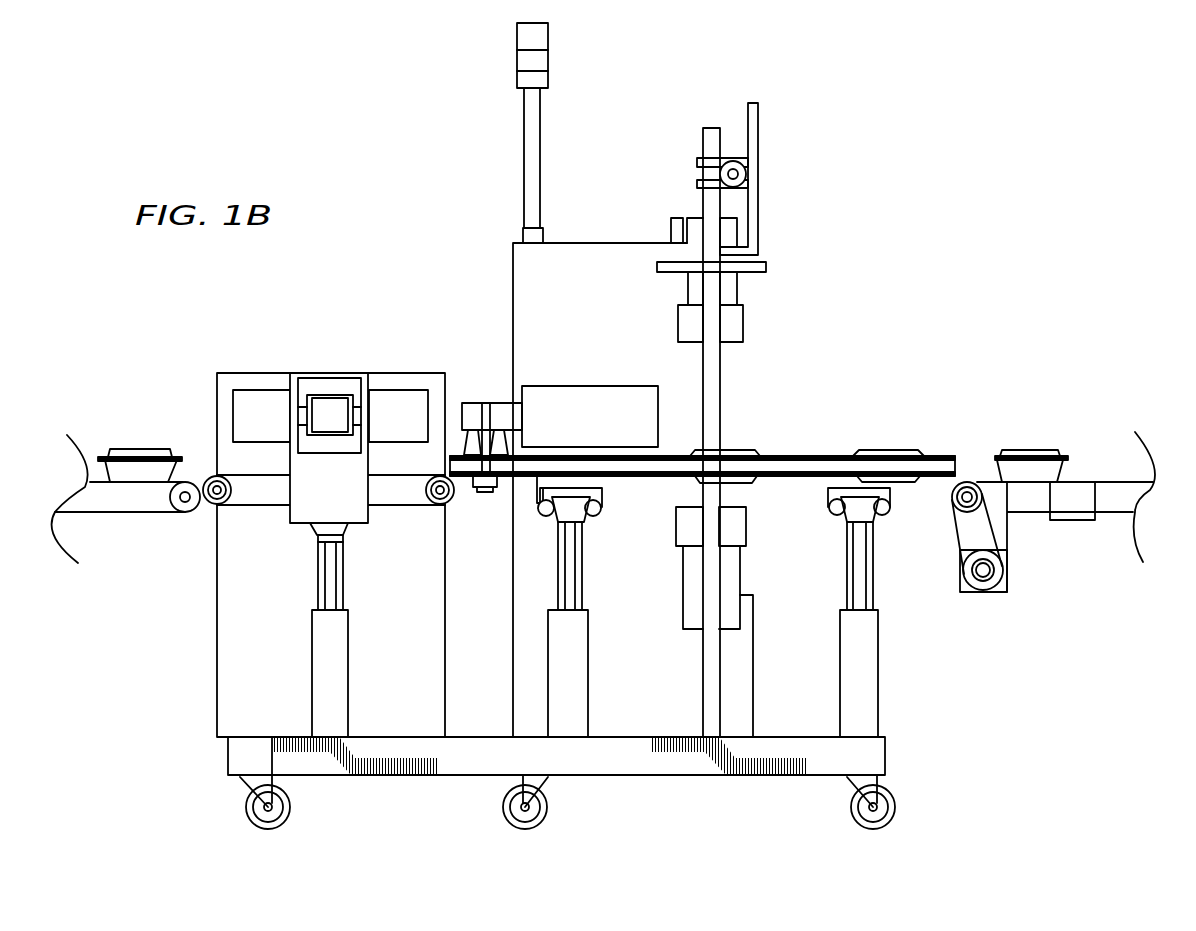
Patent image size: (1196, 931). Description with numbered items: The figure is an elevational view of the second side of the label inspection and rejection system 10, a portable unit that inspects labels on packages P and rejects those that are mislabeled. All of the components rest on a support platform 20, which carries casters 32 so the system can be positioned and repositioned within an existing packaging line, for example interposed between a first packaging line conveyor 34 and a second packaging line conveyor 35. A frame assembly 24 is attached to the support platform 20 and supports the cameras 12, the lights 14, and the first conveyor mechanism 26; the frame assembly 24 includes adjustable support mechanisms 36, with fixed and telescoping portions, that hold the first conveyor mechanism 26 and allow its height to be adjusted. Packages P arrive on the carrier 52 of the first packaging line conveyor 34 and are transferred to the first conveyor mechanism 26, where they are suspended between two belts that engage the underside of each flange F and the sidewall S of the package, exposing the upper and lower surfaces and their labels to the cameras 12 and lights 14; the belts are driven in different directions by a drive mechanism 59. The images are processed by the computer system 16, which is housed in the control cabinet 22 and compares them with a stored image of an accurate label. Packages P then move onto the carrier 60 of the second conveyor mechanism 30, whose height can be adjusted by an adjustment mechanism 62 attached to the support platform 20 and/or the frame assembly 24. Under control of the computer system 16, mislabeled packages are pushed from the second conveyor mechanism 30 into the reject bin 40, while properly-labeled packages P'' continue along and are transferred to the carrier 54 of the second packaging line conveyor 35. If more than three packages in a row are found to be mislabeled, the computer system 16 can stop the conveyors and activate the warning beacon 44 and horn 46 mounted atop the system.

The label inspection and rejection system 10 is at (803, 329).
The cameras 12 is at (731, 290).
The lights 14 is at (737, 325).
The computer system 16 is at (598, 240).
The support platform 20 is at (656, 772).
The control cabinet 22 is at (513, 687).
The frame assembly 24 is at (758, 221).
The first conveyor mechanism 26 is at (940, 452).
The second conveyor mechanism 30 is at (414, 508).
The casters 32 is at (265, 830).
The first packaging line conveyor 34 is at (1084, 543).
The second packaging line conveyor 35 is at (101, 533).
The adjustable support mechanisms 36 is at (578, 658).
The reject bin 40 is at (217, 405).
The warning beacon 44 is at (548, 60).
The horn 46 is at (548, 80).
The carrier 52 is at (1113, 482).
The carrier 54 is at (138, 512).
The drive mechanism 59 is at (575, 405).
The carrier 60 is at (383, 505).
The adjustment mechanism 62 is at (330, 657).
The packages P is at (969, 423).
The properly-labeled packages P'' is at (138, 431).
The flange F is at (968, 482).
The sidewall S is at (957, 503).